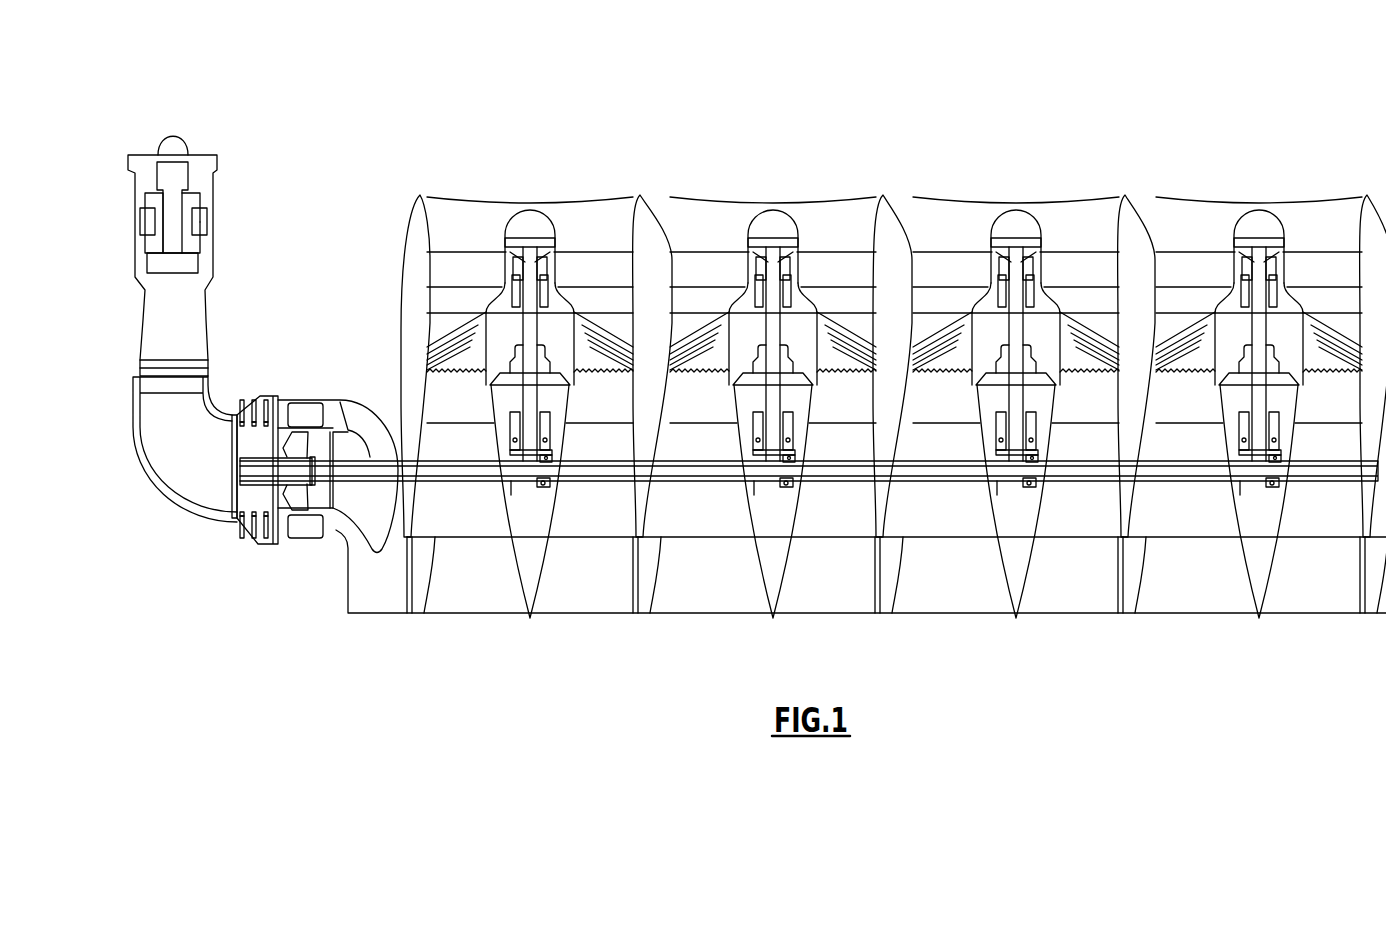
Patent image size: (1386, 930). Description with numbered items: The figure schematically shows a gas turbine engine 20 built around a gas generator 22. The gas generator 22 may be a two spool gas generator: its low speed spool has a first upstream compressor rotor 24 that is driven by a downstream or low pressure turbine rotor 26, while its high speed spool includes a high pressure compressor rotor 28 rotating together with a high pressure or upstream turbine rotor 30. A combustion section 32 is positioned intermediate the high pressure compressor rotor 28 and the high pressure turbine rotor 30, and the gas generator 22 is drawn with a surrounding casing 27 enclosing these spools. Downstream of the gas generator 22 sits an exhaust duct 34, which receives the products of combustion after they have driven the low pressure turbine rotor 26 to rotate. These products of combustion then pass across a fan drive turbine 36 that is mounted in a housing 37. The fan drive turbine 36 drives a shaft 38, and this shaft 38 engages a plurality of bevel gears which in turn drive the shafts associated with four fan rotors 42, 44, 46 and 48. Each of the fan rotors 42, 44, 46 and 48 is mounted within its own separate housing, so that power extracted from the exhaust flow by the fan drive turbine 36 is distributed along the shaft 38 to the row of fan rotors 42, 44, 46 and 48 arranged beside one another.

The gas turbine engine 20 is at (1036, 78).
The gas generator 22 is at (270, 198).
The first upstream compressor rotor 24 is at (182, 175).
The low pressure turbine rotor 26 is at (162, 263).
The valve housing 27 is at (142, 162).
The high pressure compressor rotor 28 is at (197, 198).
The high pressure turbine rotor 30 is at (197, 245).
The combustion section 32 is at (202, 222).
The exhaust duct 34 is at (173, 440).
The fan drive turbine 36 is at (260, 503).
The housing 37 is at (300, 400).
The shaft 38 is at (467, 470).
The fan rotor 42 is at (570, 263).
The fan rotor 44 is at (813, 263).
The fan rotor 46 is at (1056, 263).
The fan rotor 48 is at (1205, 263).